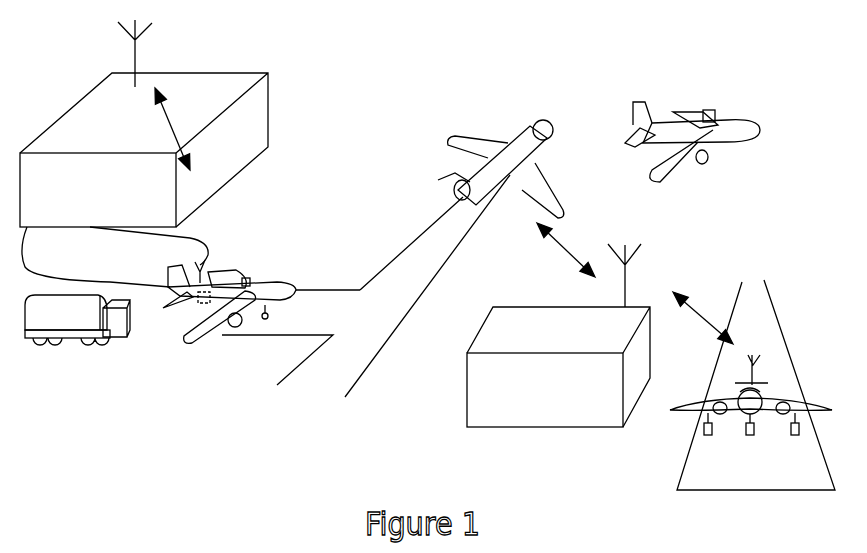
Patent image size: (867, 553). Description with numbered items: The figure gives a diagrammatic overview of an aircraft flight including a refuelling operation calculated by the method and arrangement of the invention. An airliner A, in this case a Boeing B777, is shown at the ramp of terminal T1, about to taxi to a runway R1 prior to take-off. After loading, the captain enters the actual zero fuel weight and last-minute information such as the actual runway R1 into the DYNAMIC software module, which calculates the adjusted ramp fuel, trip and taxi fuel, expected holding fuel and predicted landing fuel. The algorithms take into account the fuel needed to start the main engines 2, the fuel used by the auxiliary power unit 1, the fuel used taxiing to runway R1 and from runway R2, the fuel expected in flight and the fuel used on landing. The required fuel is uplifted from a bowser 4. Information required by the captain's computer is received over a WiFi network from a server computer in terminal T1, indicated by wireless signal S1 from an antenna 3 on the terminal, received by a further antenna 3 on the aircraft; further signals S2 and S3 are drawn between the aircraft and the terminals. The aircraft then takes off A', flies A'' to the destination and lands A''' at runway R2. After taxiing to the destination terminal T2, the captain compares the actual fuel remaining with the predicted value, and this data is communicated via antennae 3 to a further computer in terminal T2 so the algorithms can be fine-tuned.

The auxiliary power unit 1 is at (192, 302).
The main engines 2 is at (252, 283).
The antenna 3 is at (135, 57).
The bowser 4 is at (120, 332).
The airliner A is at (242, 288).
The aircraft taking off A' is at (510, 169).
The aircraft in flight A'' is at (670, 142).
The aircraft landing A''' is at (757, 392).
The terminal T1 is at (258, 127).
The destination terminal T2 is at (640, 360).
The wireless signal S1 is at (166, 102).
The second signal S2 is at (692, 307).
The third signal S3 is at (555, 235).
The runway R1 is at (443, 288).
The destination runway R2 is at (778, 306).